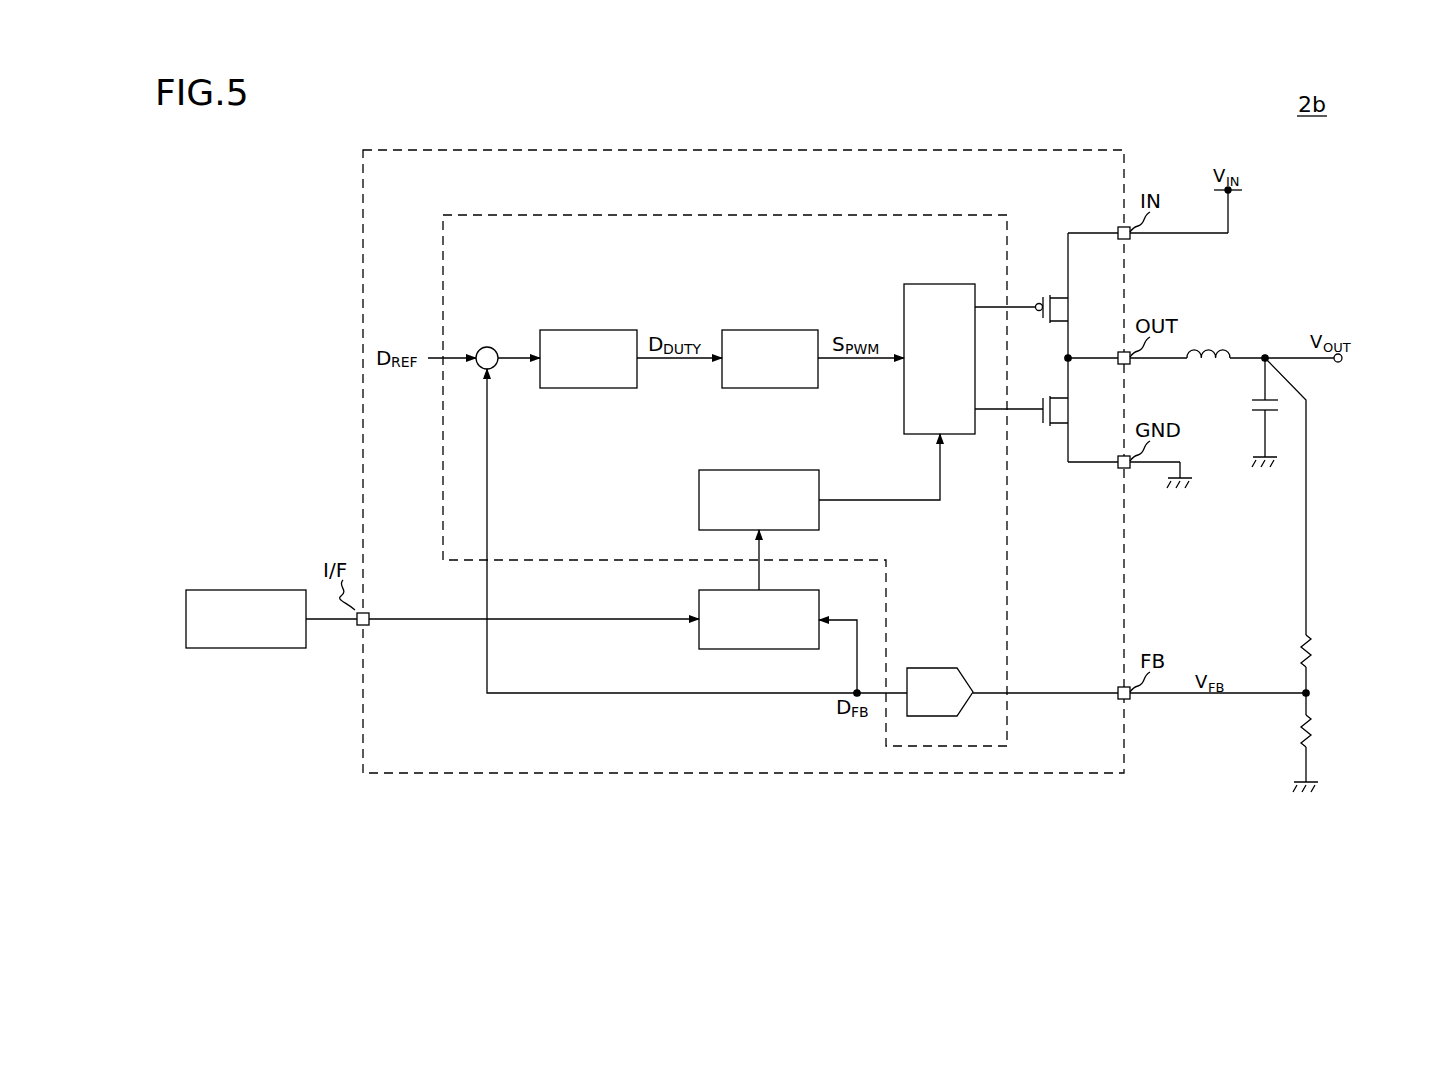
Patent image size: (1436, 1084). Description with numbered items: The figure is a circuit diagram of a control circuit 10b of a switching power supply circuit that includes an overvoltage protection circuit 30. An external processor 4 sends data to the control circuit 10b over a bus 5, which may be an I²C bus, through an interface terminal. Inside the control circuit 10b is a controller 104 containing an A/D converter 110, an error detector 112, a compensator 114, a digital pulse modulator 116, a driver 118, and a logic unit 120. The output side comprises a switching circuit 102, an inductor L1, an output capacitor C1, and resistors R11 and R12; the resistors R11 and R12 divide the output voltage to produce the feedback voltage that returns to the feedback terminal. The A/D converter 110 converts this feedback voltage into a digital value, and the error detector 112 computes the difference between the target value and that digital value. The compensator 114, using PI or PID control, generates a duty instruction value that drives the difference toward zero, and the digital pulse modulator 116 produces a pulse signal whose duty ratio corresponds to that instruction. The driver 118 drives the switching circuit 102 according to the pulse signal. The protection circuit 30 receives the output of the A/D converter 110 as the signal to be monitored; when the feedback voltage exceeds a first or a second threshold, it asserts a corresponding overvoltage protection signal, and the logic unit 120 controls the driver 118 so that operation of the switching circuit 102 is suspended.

The control circuit 10b is at (718, 773).
The controller 104 is at (734, 215).
The error detector 112 is at (488, 347).
The compensator 114 is at (595, 330).
The digital pulse modulator 116 is at (775, 330).
The driver 118 is at (945, 284).
The logic unit 120 is at (771, 470).
The protection circuit 30 is at (697, 636).
The A/D converter 110 is at (932, 668).
The switching circuit 102 is at (1092, 468).
The processor 4 is at (233, 590).
The bus 5 is at (328, 622).
The inductor L1 is at (1206, 354).
The output capacitor C1 is at (1248, 405).
The resistor R11 is at (1318, 652).
The resistor R12 is at (1318, 732).